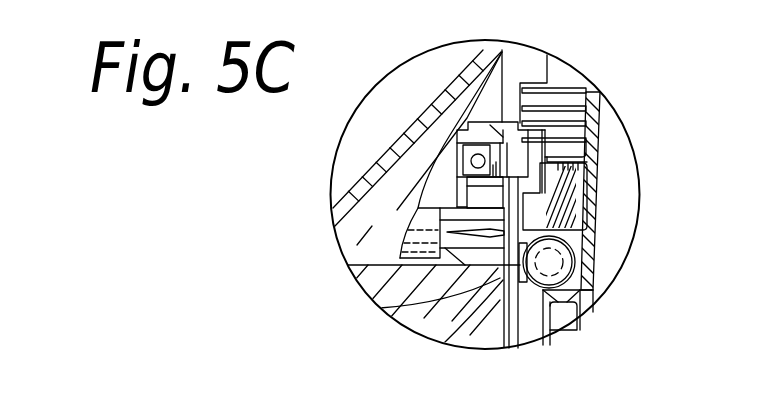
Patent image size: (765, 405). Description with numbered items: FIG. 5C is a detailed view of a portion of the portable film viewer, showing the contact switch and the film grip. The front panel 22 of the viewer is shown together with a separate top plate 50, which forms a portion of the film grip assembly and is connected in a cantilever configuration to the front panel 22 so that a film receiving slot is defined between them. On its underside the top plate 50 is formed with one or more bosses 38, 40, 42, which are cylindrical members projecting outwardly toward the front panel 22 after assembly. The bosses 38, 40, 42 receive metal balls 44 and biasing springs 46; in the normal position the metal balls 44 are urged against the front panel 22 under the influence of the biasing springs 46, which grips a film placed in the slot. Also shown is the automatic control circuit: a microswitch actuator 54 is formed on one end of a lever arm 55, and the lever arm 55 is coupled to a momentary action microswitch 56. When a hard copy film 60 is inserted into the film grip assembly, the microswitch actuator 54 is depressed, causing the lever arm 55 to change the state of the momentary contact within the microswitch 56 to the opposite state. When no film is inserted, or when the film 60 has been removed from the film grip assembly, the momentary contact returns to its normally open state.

The front panel 22 is at (503, 345).
The boss 38 is at (571, 228).
The boss 40 is at (568, 197).
The boss 42 is at (557, 161).
The metal ball 44 is at (427, 342).
The biasing spring 46 is at (580, 238).
The top plate 50 is at (600, 113).
The microswitch actuator 54 is at (383, 308).
The lever arm 55 is at (510, 200).
The momentary action microswitch 56 is at (466, 150).
The hard copy film 60 is at (523, 312).